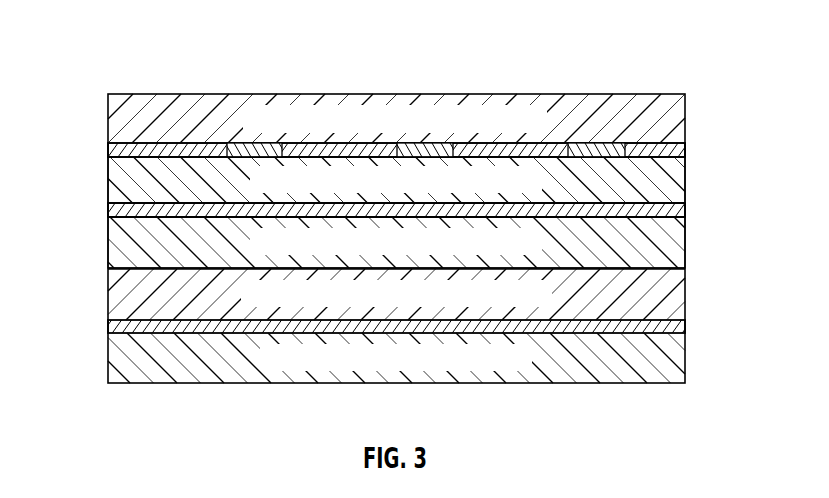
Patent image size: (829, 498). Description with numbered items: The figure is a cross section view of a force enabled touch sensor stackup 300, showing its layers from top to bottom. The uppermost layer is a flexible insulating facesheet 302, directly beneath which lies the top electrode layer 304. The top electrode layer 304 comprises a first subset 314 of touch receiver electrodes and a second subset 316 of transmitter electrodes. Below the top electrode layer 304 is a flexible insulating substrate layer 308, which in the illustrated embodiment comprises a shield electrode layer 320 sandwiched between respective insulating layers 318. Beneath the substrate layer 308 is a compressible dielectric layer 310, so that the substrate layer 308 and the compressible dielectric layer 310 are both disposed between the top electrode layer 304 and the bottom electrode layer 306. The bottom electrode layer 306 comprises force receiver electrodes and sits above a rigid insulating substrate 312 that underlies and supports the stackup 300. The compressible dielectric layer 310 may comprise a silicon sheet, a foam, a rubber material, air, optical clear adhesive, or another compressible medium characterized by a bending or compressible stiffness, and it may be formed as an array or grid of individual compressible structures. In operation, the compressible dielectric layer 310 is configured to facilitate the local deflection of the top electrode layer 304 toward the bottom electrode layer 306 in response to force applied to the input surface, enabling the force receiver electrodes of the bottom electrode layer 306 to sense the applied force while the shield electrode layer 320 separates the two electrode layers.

The force enabled touch sensor stackup 300 is at (105, 38).
The flexible insulating facesheet 302 is at (685, 121).
The top electrode layer 304 is at (108, 151).
The bottom electrode layer 306 is at (108, 326).
The flexible insulating substrate layer 308 is at (100, 157).
The compressible dielectric layer 310 is at (108, 292).
The rigid insulating substrate 312 is at (108, 357).
The first subset of touch receiver electrodes 314 is at (685, 151).
The second subset of transmitter electrodes 316 is at (598, 143).
The insulating layers 318 is at (685, 186).
The shield electrode layer 320 is at (685, 211).